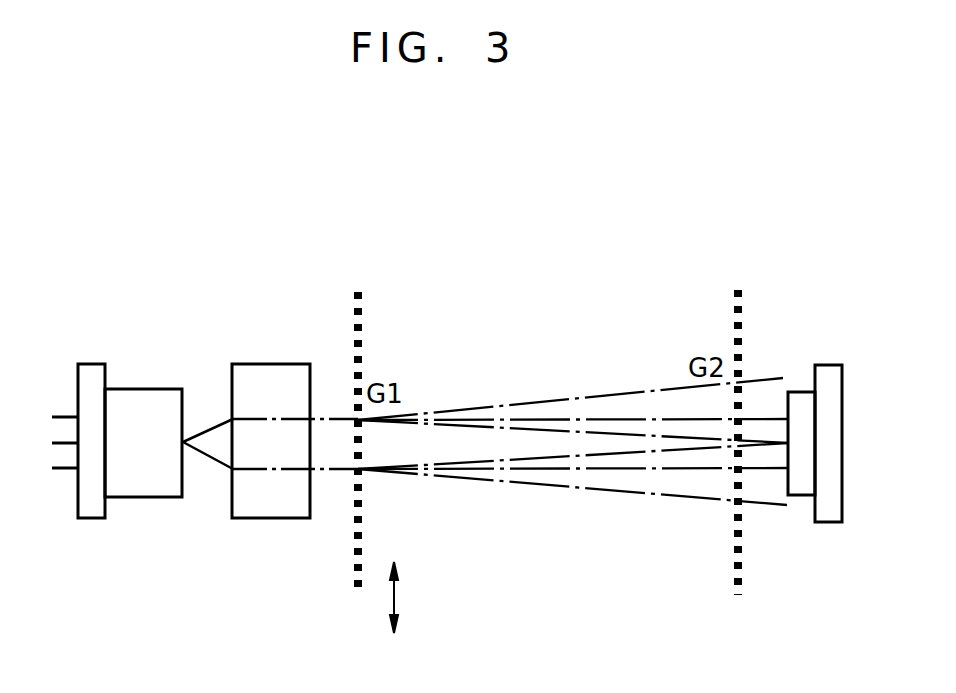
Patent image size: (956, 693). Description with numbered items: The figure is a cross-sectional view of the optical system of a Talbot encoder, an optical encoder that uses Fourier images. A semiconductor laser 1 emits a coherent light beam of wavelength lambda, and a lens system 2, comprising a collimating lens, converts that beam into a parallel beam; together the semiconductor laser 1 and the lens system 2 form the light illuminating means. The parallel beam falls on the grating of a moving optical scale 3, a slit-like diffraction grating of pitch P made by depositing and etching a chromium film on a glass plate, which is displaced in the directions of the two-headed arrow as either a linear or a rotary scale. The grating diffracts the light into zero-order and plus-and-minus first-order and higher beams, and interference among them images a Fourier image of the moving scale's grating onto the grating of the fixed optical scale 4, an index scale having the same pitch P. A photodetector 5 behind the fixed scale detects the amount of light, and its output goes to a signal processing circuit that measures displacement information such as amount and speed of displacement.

The semiconductor laser 1 is at (92, 373).
The lens system 2 is at (260, 372).
The moving optical scale 3 is at (363, 290).
The fixed optical scale 4 is at (737, 287).
The photodetector 5 is at (827, 397).